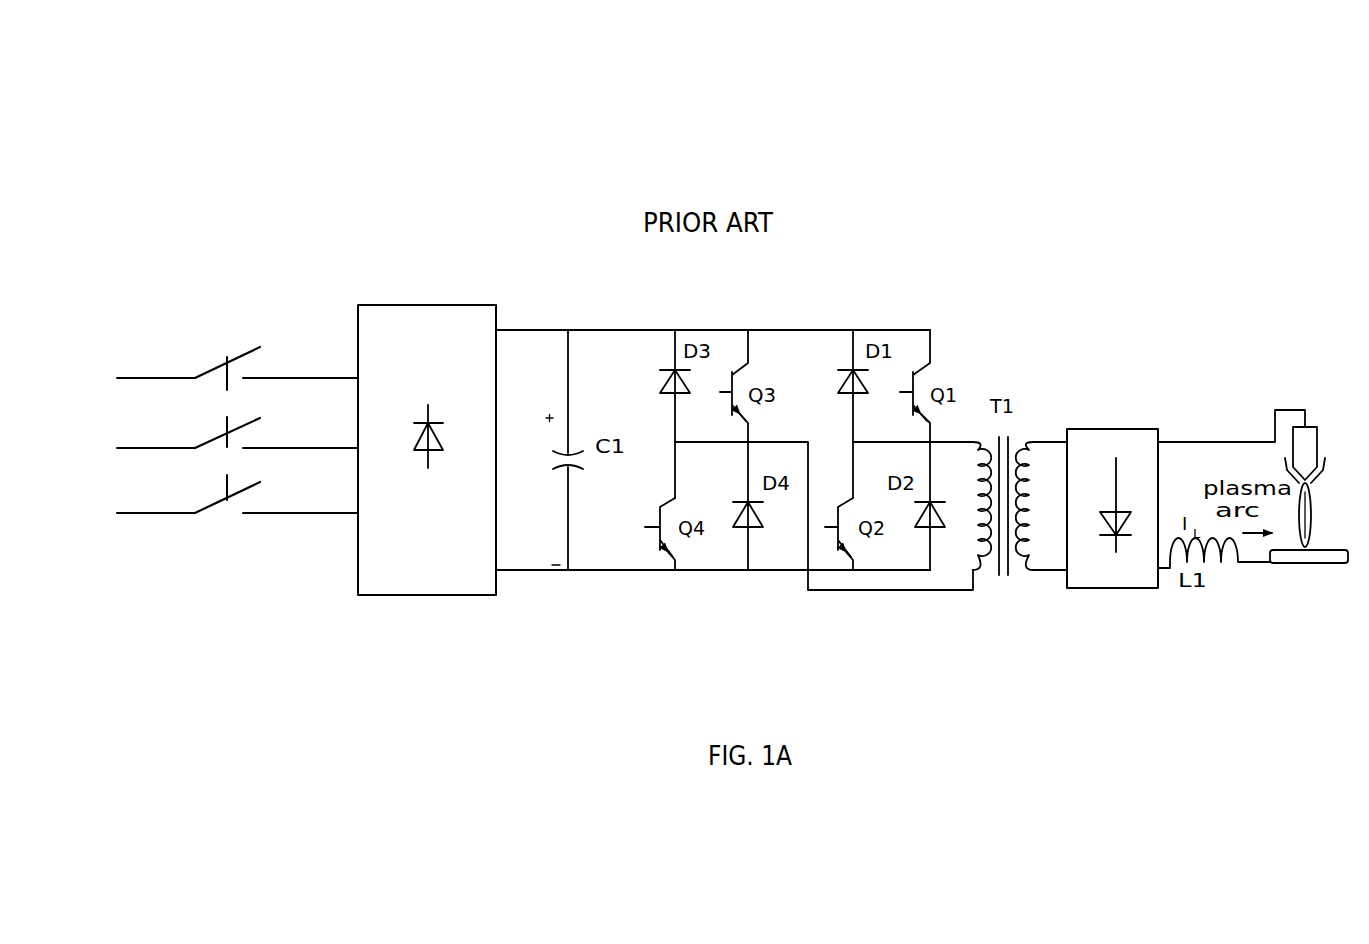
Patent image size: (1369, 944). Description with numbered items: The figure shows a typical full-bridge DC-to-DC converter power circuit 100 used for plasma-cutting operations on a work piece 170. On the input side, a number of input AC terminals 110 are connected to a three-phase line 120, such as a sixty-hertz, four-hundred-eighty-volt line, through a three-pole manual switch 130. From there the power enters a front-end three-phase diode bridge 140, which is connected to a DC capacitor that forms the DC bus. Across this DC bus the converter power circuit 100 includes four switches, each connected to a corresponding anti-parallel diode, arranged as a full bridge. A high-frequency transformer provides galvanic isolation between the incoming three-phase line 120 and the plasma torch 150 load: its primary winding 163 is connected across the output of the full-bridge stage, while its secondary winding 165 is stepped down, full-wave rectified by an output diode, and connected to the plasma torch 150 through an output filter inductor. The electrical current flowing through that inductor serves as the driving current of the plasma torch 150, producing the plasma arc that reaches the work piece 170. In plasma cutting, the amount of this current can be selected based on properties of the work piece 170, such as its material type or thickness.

The full-bridge DC-to-DC converter power circuit 100 is at (1158, 97).
The input AC terminals 110 is at (108, 508).
The three-phase line 120 is at (297, 395).
The three-pole manual switch 130 is at (230, 484).
The front-end three-phase diode bridge 140 is at (440, 352).
The plasma torch 150 is at (1301, 430).
The primary winding 163 is at (982, 577).
The secondary winding 165 is at (1029, 578).
The work piece 170 is at (1290, 585).